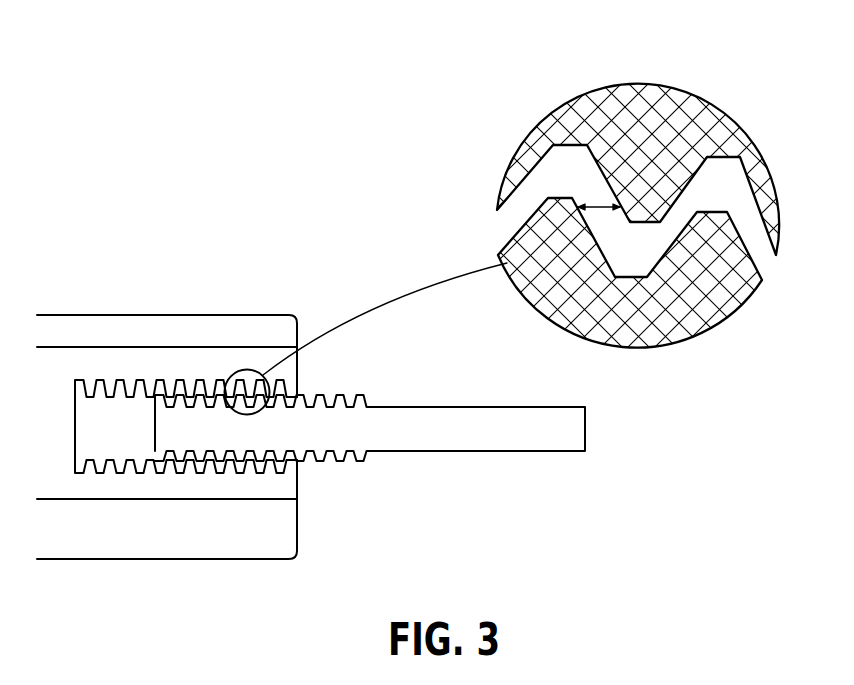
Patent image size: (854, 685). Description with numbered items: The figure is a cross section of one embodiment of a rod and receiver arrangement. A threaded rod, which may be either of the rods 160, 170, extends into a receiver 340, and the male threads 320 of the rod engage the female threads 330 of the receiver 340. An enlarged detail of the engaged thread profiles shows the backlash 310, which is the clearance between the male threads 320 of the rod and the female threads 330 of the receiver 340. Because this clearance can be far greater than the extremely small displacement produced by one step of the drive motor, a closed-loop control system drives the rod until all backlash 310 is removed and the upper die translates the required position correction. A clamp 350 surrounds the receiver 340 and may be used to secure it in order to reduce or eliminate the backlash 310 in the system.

The clamp 350 is at (167, 437).
The receiver 340 is at (176, 414).
The rod 160 is at (370, 428).
The rod 170 is at (563, 440).
The female threads 330 is at (697, 118).
The male threads 320 is at (697, 310).
The backlash 310 is at (597, 205).